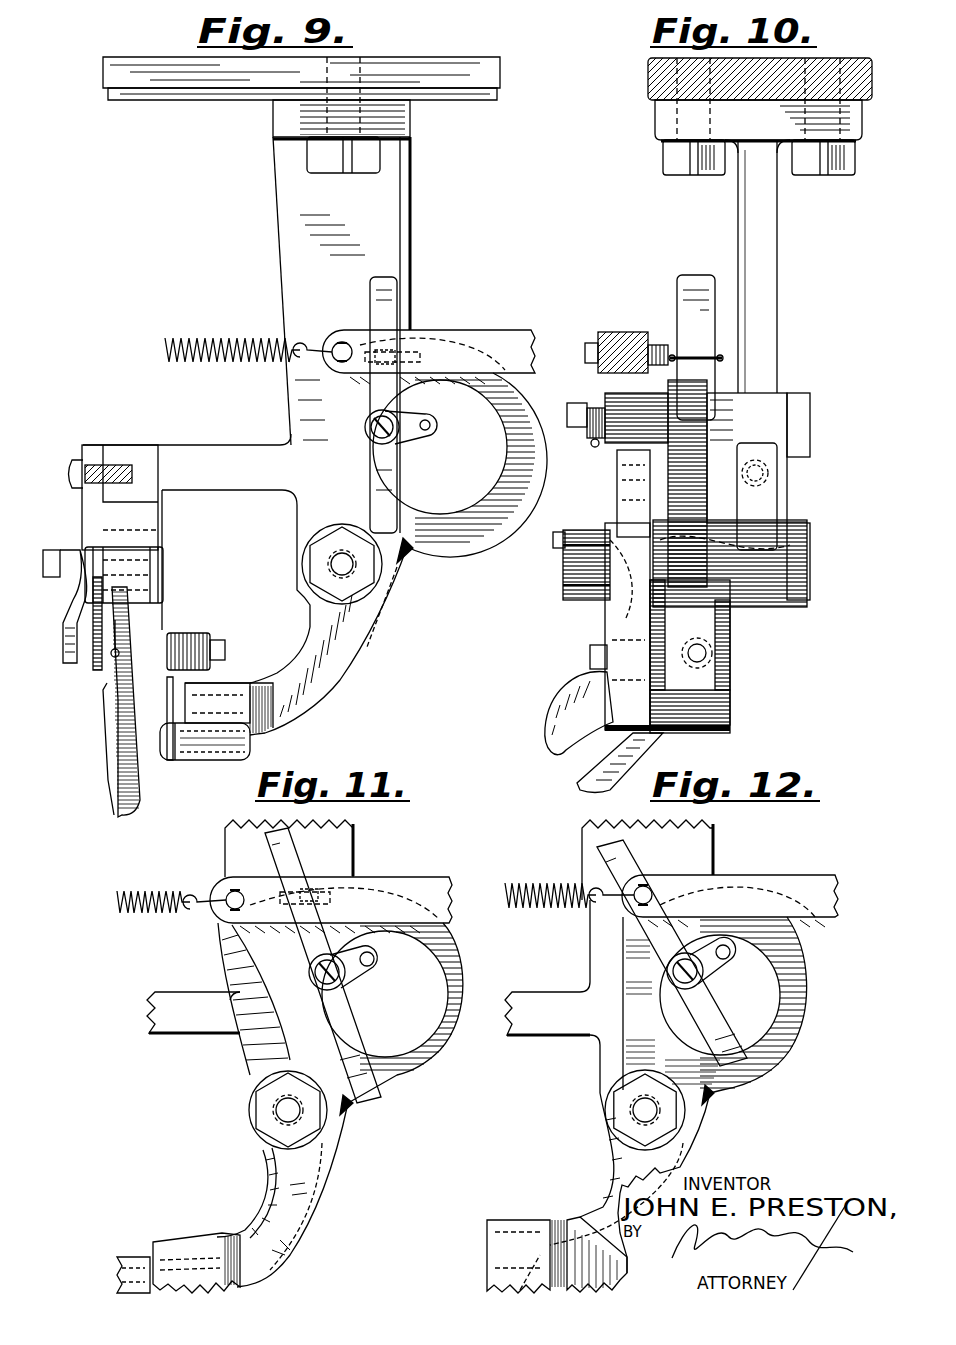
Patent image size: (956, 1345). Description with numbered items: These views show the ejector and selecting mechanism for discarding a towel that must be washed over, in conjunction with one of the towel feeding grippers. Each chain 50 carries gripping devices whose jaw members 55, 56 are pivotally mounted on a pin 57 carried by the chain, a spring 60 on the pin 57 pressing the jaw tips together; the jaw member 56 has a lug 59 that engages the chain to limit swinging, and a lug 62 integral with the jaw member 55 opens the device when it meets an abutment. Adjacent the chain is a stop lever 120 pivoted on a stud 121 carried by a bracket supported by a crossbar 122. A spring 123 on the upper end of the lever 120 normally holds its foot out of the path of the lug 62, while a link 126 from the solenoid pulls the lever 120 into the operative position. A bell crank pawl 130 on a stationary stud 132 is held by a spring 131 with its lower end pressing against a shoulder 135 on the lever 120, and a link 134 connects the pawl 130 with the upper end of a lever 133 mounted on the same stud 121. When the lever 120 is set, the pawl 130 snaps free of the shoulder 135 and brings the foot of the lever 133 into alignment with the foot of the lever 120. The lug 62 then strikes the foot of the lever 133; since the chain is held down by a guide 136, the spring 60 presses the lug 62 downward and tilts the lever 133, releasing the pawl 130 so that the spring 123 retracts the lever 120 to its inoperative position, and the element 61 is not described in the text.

In FIG. 9, the chain 50 is at (146, 570).
In FIG. 10, the chain 50 is at (737, 523).
In FIG. 9, the jaw member 55 is at (102, 702).
In FIG. 10, the jaw member 55 is at (541, 541).
In FIG. 9, the jaw member 56 is at (89, 696).
In FIG. 10, the jaw member 56 is at (591, 774).
In FIG. 9, the pin 57 is at (236, 627).
In FIG. 9, the lug 59 is at (82, 659).
In FIG. 9, the spring 60 is at (188, 632).
In FIG. 9, the latch lever 61 is at (65, 584).
In FIG. 9, the lug 62 is at (205, 765).
In FIG. 10, the lug 62 is at (582, 643).
In FIG. 11, the lug 62 is at (125, 1253).
In FIG. 9, the stop lever 120 is at (245, 597).
In FIG. 10, the stop lever 120 is at (575, 699).
In FIG. 11, the stop lever 120 is at (256, 1108).
In FIG. 12, the stop lever 120 is at (603, 1096).
In FIG. 9, the stud 121 is at (311, 564).
In FIG. 10, the stud 121 is at (562, 565).
In FIG. 11, the stud 121 is at (255, 1110).
In FIG. 12, the stud 121 is at (613, 1110).
In FIG. 9, the crossbar 122 is at (301, 97).
In FIG. 10, the crossbar 122 is at (730, 89).
In FIG. 9, the spring 123 is at (240, 331).
In FIG. 11, the spring 123 is at (143, 898).
In FIG. 12, the spring 123 is at (564, 877).
In FIG. 9, the link 126 is at (429, 338).
In FIG. 10, the link 126 is at (617, 332).
In FIG. 11, the link 126 is at (331, 888).
In FIG. 12, the link 126 is at (735, 881).
In FIG. 9, the bell crank pawl 130 is at (416, 405).
In FIG. 10, the bell crank pawl 130 is at (637, 384).
In FIG. 11, the bell crank pawl 130 is at (354, 967).
In FIG. 12, the bell crank pawl 130 is at (714, 957).
In FIG. 9, the spring 131 is at (450, 427).
In FIG. 10, the spring 131 is at (578, 460).
In FIG. 11, the spring 131 is at (392, 965).
In FIG. 12, the spring 131 is at (743, 962).
In FIG. 9, the stationary stud 132 is at (410, 413).
In FIG. 10, the stationary stud 132 is at (572, 406).
In FIG. 11, the stationary stud 132 is at (358, 981).
In FIG. 12, the stationary stud 132 is at (717, 971).
In FIG. 9, the lever 133 is at (460, 480).
In FIG. 10, the lever 133 is at (691, 656).
In FIG. 11, the lever 133 is at (331, 1068).
In FIG. 12, the lever 133 is at (746, 1105).
In FIG. 9, the link 134 is at (354, 326).
In FIG. 10, the link 134 is at (674, 326).
In FIG. 11, the link 134 is at (320, 870).
In FIG. 9, the shoulder 135 is at (416, 578).
In FIG. 11, the shoulder 135 is at (369, 1121).
In FIG. 12, the shoulder 135 is at (736, 1106).
In FIG. 9, the guide 136 is at (114, 478).